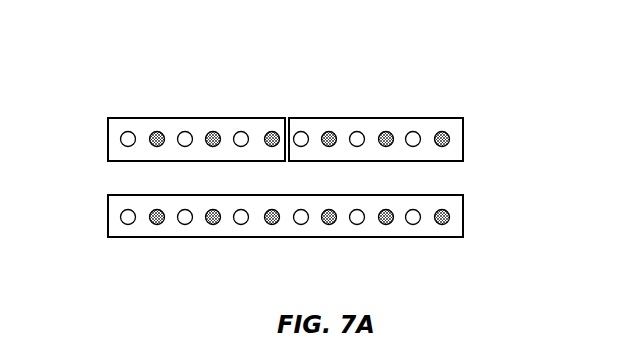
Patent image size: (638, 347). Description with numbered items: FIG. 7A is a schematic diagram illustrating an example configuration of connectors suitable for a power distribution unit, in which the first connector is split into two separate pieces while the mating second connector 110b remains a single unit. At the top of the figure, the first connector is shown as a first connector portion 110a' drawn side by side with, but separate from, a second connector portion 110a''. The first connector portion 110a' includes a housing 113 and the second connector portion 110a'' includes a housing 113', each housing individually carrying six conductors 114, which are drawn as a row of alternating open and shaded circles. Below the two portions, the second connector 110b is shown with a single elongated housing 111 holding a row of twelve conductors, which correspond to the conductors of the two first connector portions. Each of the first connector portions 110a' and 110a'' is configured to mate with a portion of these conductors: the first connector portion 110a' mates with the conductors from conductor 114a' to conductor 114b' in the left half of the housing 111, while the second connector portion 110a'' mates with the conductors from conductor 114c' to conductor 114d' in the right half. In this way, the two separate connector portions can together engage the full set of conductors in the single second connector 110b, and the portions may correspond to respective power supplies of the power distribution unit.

The first connector portion 110a' is at (165, 82).
The second connector portion 110a'' is at (411, 83).
The second connector 110b is at (87, 208).
The housing 111 is at (463, 222).
The housing 113 is at (171, 139).
The housing 113' is at (406, 137).
The conductors 114 is at (160, 133).
The conductor 114a' is at (108, 238).
The conductor 114b' is at (250, 238).
The conductor 114c' is at (285, 238).
The conductor 114d' is at (420, 238).